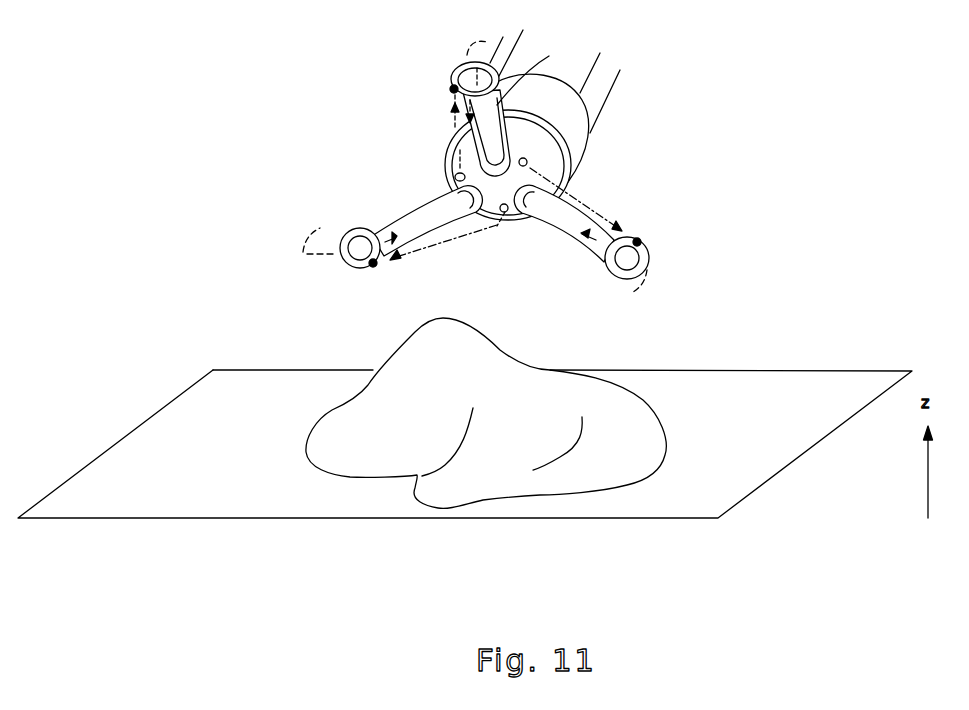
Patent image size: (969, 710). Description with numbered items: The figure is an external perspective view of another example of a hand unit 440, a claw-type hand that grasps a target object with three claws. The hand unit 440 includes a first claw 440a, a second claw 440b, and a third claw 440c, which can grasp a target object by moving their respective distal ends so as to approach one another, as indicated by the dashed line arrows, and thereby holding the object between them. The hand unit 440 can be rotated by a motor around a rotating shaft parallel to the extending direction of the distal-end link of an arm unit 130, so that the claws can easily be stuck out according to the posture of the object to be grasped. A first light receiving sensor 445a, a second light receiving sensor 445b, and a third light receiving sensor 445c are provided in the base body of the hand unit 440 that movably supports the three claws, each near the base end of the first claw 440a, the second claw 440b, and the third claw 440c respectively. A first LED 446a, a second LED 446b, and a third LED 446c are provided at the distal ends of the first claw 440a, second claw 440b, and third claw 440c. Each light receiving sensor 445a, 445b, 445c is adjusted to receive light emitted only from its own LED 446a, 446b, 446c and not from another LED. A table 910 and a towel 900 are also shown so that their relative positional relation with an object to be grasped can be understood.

The arm unit 130 is at (592, 96).
The hand unit 440 is at (583, 152).
The first claw 440a is at (517, 105).
The second claw 440b is at (423, 212).
The third claw 440c is at (557, 231).
The first light receiving sensor 445a is at (452, 175).
The second light receiving sensor 445b is at (502, 213).
The third light receiving sensor 445c is at (528, 163).
The first LED 446a is at (452, 88).
The second LED 446b is at (371, 266).
The third LED 446c is at (640, 242).
The towel 900 is at (325, 445).
The table 910 is at (806, 380).